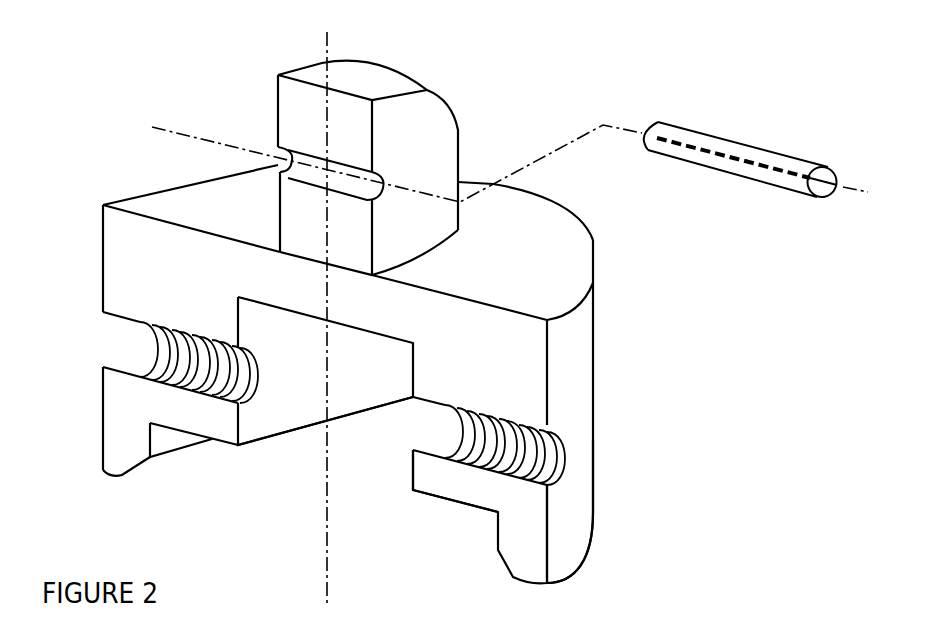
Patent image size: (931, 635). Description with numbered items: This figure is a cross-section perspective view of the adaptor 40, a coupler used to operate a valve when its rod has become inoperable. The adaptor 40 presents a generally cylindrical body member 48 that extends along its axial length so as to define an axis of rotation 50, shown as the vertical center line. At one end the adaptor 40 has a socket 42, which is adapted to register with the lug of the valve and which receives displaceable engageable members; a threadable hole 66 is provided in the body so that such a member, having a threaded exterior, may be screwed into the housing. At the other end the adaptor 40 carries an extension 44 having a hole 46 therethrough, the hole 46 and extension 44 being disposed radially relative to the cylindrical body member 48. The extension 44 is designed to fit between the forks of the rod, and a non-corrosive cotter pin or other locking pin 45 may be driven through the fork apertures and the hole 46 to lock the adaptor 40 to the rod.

The adaptor 40 is at (593, 240).
The socket 42 is at (375, 468).
The extension 44 is at (407, 110).
The locking pin 45 is at (720, 143).
The hole 46 is at (300, 166).
The cylindrical body member 48 is at (573, 513).
The axis of rotation 50 is at (318, 453).
The threadable hole 66 is at (500, 441).